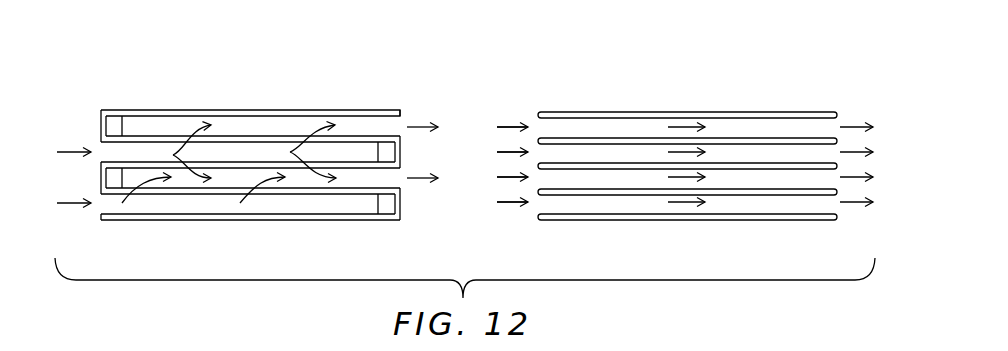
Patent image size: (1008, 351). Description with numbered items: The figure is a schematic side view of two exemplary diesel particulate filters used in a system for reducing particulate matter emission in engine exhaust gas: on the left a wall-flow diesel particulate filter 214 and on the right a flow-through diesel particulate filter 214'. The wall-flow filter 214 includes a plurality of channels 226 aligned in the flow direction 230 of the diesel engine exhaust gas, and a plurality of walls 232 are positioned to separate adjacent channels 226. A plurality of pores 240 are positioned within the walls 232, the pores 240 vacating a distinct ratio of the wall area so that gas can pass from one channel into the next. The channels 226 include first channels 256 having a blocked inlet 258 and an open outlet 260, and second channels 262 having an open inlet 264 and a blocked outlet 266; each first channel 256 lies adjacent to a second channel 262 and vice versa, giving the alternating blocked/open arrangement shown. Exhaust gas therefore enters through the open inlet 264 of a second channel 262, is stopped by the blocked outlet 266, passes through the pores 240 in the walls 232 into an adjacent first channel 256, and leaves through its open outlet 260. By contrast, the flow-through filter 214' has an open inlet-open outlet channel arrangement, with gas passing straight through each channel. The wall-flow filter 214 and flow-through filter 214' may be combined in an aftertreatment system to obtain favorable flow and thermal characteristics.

The wall-flow diesel particulate filter 214 is at (247, 137).
The flow-through diesel particulate filter 214' is at (685, 136).
The channels 226 is at (250, 137).
The blocked inlet 258 is at (101, 131).
The second channels 262 is at (147, 153).
The first channels 256 is at (277, 127).
The pores 240 is at (350, 136).
The open outlet 260 is at (390, 127).
The blocked outlet 266 is at (392, 153).
The open inlet 264 is at (113, 152).
The flow direction 230 is at (67, 205).
The walls 232 is at (293, 195).